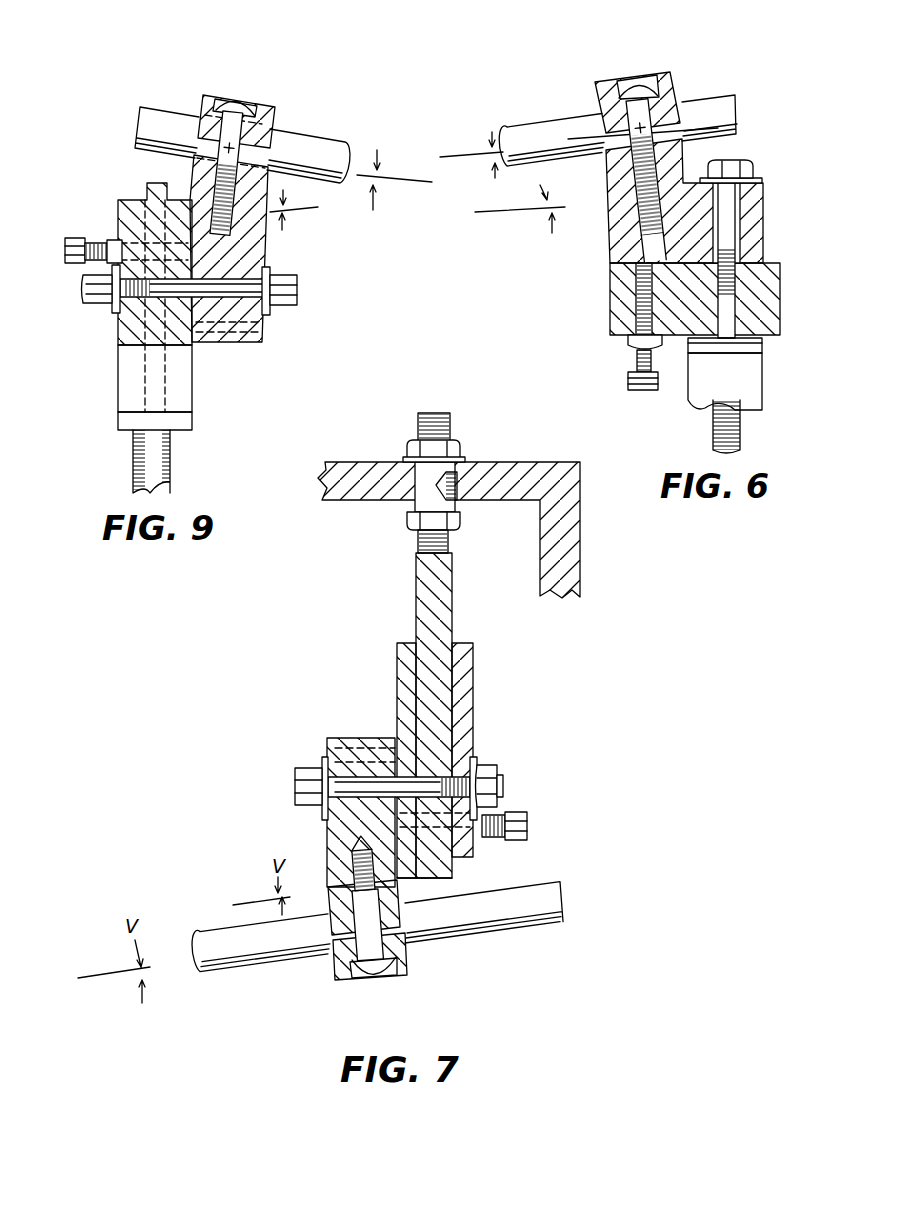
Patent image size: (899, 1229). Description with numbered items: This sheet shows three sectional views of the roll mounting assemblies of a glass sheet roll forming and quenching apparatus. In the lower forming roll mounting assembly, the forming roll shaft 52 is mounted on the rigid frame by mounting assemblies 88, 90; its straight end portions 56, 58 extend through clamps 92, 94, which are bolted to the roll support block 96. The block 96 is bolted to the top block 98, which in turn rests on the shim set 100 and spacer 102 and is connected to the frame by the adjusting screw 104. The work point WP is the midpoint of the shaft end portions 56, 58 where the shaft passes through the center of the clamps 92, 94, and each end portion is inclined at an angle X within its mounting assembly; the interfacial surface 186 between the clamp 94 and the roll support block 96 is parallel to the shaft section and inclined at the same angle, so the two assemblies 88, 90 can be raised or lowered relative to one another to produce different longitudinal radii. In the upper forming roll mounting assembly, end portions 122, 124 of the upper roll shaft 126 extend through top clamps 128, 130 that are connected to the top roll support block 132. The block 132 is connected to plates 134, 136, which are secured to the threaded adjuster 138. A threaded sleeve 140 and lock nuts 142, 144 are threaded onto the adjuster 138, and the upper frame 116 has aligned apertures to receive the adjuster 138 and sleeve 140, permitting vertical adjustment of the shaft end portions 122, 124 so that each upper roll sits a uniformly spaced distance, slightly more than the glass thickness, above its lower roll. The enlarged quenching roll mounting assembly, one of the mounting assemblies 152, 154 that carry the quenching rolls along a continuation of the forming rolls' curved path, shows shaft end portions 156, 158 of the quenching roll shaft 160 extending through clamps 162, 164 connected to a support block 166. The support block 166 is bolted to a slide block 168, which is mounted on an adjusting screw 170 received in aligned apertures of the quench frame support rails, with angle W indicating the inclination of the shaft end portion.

In FIG. 9, the mounting assembly 152 is at (222, 37).
In FIG. 9, the mounting assembly 154 is at (258, 37).
In FIG. 9, the shaft end portion 156 is at (293, 128).
In FIG. 9, the shaft end portion 158 is at (332, 133).
In FIG. 9, the shaft 160 is at (173, 110).
In FIG. 9, the clamp 162 is at (272, 105).
In FIG. 9, the clamp 164 is at (193, 180).
In FIG. 9, the support block 166 is at (262, 256).
In FIG. 9, the slide block 168 is at (118, 328).
In FIG. 9, the adjusting screw 170 is at (172, 440).
In FIG. 6, the mounting assembly 88 is at (618, 35).
In FIG. 6, the mounting assembly 90 is at (650, 35).
In FIG. 6, the clamp 92 is at (666, 72).
In FIG. 6, the shaft 52 is at (703, 100).
In FIG. 6, the end portion 56 is at (585, 115).
In FIG. 6, the end portion 58 is at (551, 119).
In FIG. 6, the clamp 94 is at (680, 150).
In FIG. 6, the roll support block 96 is at (765, 190).
In FIG. 6, the top block 98 is at (780, 282).
In FIG. 6, the shim set 100 is at (765, 340).
In FIG. 6, the spacer 102 is at (765, 370).
In FIG. 6, the adjusting screw 104 is at (745, 420).
In FIG. 6, the interfacial surface 186 is at (613, 190).
In FIG. 7, the frame 116 is at (583, 510).
In FIG. 7, the threaded sleeve 140 is at (413, 478).
In FIG. 7, the lock nut 142 is at (457, 443).
In FIG. 7, the lock nut 144 is at (462, 520).
In FIG. 7, the threaded adjuster 138 is at (416, 580).
In FIG. 7, the plate 134 is at (397, 687).
In FIG. 7, the plate 136 is at (473, 693).
In FIG. 7, the top clamp 130 is at (437, 890).
In FIG. 7, the top roll support block 132 is at (327, 837).
In FIG. 7, the top clamp 128 is at (407, 965).
In FIG. 7, the shaft 126 is at (503, 937).
In FIG. 7, the end portion 122 is at (217, 977).
In FIG. 7, the end portion 124 is at (261, 967).